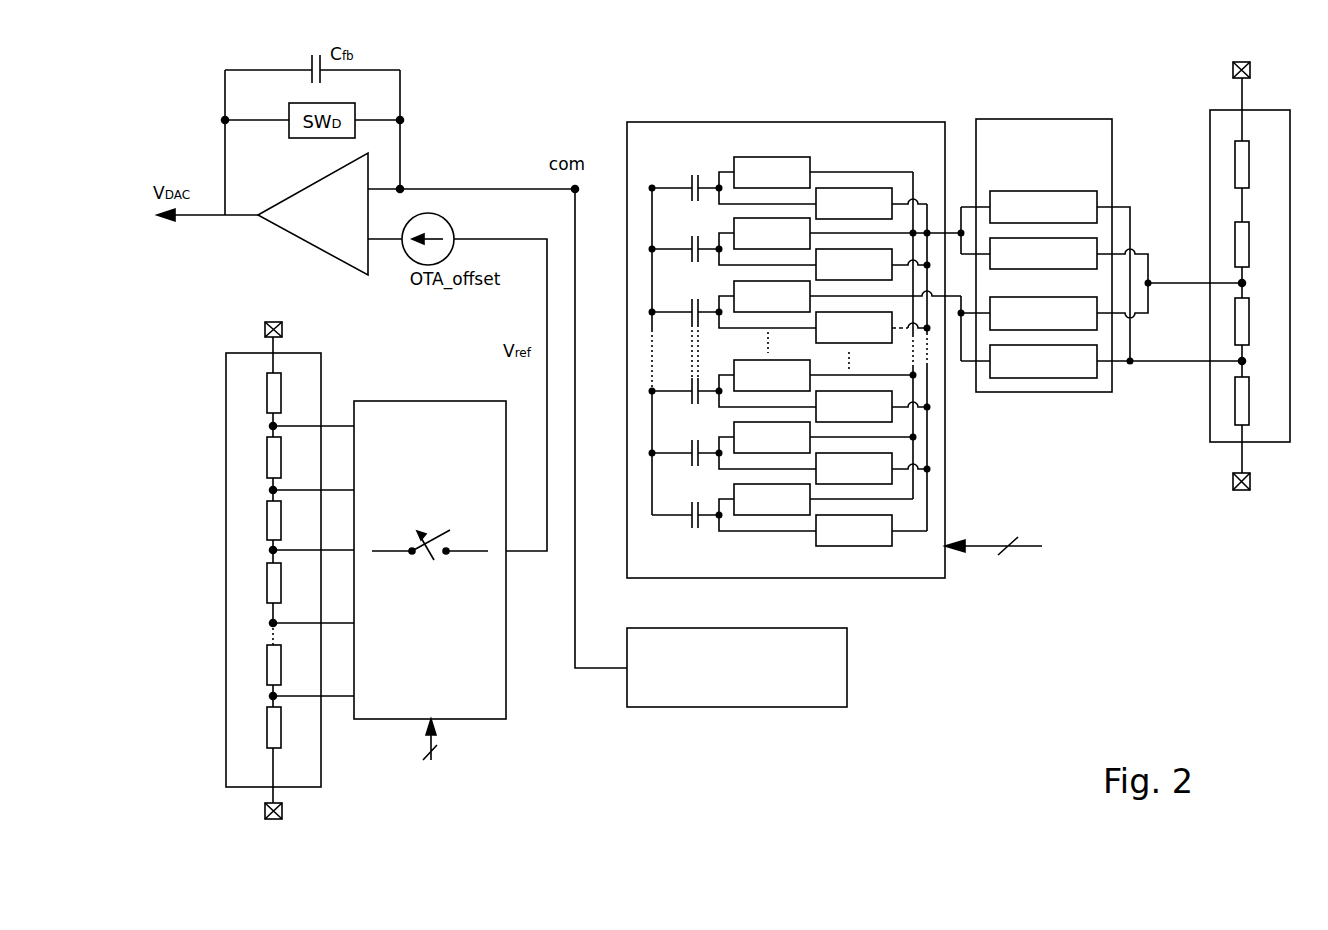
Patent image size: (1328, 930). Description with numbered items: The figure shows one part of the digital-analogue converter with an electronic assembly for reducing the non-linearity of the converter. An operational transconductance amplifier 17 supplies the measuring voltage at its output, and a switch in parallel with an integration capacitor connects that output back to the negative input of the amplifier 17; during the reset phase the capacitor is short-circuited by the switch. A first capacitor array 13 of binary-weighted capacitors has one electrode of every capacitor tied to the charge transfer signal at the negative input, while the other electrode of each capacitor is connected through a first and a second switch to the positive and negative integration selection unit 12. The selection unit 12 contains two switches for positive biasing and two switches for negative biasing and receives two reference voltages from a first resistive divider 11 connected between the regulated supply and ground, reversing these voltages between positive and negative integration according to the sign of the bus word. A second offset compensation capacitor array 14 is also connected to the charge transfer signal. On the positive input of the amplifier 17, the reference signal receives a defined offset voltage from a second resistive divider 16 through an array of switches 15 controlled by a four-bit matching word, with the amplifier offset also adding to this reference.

The first resistive divider DR1 11 is at (1215, 146).
The positive and negative integration selection unit 12 is at (1045, 122).
The first capacitor array 13 is at (938, 130).
The second offset compensation capacitor array 14 is at (847, 663).
The array of switches 15 is at (497, 681).
The second resistive divider 16 is at (236, 640).
The OTA 17 is at (308, 236).